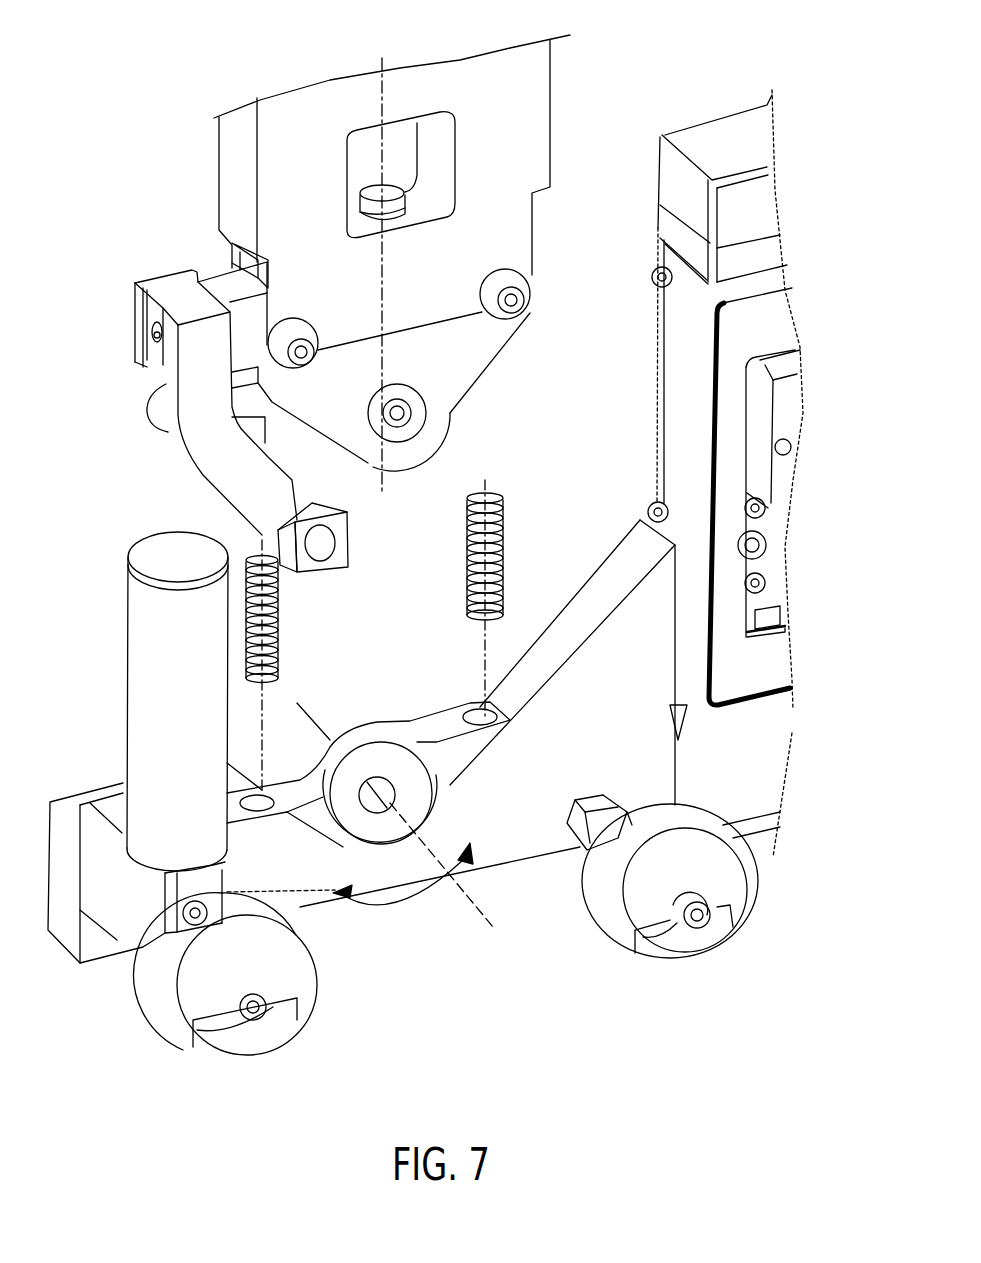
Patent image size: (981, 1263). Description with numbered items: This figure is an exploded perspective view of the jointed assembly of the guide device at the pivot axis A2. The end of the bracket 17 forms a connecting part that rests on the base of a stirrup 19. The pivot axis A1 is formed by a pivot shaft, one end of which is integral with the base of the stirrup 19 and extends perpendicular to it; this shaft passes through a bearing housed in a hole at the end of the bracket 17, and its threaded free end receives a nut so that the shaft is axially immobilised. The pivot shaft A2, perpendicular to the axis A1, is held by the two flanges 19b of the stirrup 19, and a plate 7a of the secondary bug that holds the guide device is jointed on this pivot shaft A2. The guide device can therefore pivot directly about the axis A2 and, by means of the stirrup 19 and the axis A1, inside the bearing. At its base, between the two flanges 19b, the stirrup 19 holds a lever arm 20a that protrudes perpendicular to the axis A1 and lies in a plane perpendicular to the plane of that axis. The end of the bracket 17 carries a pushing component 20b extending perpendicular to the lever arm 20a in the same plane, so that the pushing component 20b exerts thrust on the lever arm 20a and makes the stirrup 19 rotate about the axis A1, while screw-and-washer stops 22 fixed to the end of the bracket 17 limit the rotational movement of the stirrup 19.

The bracket 17 is at (522, 108).
The stops 22 is at (537, 288).
The stirrup 19 is at (523, 369).
The flanges of the stirrup 19b is at (438, 412).
The lever arm 20a is at (155, 402).
The pushing component 20b is at (175, 445).
The plate 7a is at (530, 847).
The pivot axis A1 is at (395, 278).
The pivot axis A2 is at (403, 893).